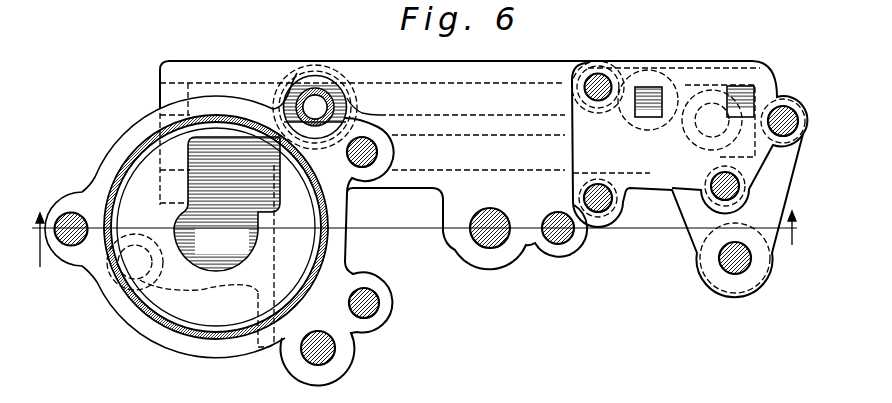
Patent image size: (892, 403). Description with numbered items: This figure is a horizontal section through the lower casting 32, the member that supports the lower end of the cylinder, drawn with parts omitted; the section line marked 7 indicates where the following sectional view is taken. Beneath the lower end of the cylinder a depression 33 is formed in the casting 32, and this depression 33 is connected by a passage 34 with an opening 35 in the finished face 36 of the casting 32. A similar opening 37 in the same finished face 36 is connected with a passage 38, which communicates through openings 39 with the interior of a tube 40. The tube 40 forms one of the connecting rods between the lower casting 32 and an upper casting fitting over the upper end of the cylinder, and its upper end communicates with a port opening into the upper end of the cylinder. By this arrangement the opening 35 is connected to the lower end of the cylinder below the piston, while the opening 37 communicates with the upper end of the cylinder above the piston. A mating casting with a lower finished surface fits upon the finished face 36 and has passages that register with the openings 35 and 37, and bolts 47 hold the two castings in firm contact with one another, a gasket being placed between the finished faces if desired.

The section line 7- 7 is at (420, 239).
The casting 32 is at (160, 75).
The depression 33 is at (227, 204).
The passage 34 is at (462, 136).
The opening 35 is at (739, 91).
The finished face 36 is at (662, 157).
The opening 37 is at (650, 97).
The passage 38 is at (344, 108).
The openings 39 is at (331, 113).
The tube 40 is at (298, 88).
The bolts 47 is at (602, 74).